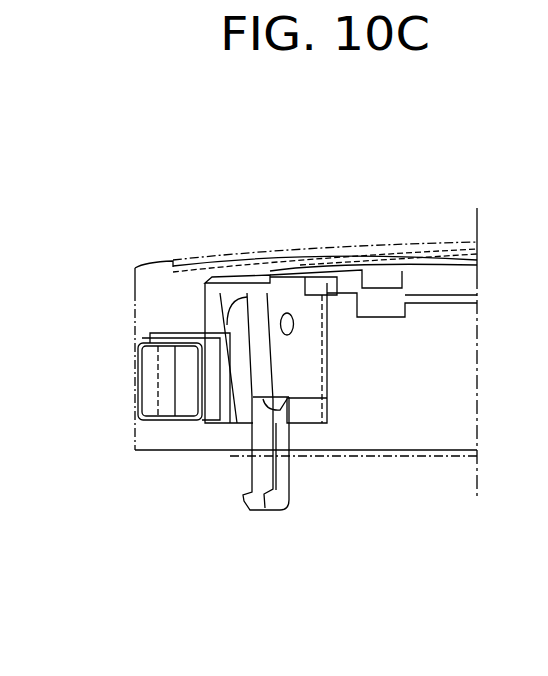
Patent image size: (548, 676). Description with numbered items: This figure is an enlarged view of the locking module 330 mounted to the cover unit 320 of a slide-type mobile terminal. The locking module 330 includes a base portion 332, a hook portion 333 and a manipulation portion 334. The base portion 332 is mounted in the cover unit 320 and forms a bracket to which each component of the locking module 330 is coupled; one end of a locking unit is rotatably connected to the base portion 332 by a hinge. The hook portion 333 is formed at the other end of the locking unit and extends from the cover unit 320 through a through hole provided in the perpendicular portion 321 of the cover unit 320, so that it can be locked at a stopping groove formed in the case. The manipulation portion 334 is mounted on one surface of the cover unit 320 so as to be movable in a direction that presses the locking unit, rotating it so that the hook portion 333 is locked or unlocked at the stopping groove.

The cover unit 320 is at (150, 297).
The perpendicular portion 321 is at (198, 449).
The locking module 330 is at (257, 460).
The base portion 332 is at (307, 370).
The hook portion 333 is at (250, 513).
The manipulation portion 334 is at (138, 379).